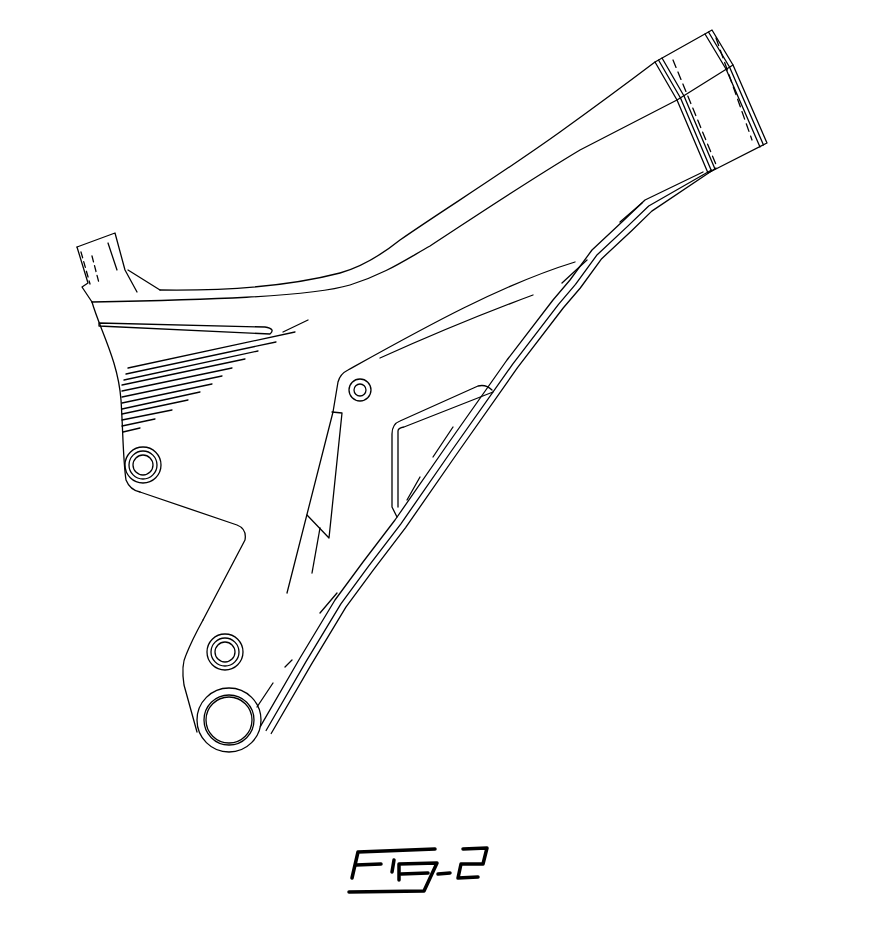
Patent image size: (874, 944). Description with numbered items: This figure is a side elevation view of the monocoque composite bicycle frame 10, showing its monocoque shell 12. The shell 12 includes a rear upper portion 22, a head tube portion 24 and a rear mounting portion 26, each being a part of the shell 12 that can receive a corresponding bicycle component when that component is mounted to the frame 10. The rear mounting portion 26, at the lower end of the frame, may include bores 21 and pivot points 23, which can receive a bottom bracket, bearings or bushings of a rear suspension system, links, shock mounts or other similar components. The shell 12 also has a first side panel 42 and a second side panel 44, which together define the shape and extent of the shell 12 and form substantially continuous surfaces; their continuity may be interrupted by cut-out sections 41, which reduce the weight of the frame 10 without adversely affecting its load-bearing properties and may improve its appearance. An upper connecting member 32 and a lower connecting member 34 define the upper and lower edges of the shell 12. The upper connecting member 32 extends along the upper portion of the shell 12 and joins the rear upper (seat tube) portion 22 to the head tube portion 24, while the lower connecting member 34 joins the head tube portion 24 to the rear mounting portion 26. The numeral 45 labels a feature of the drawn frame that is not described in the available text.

The frame 10 is at (236, 128).
The monocoque shell 12 is at (519, 130).
The bores 21 is at (243, 749).
The rear upper portion 22 is at (138, 281).
The pivot points 23 is at (125, 468).
The head tube portion 24 is at (735, 127).
The rear mounting portion 26 is at (202, 623).
The upper connecting member 32 is at (458, 204).
The lower connecting member 34 is at (455, 457).
The cut-out sections 41 is at (321, 506).
The first side panel 42 is at (585, 213).
The second side panel 44 is at (338, 274).
The dropout plate 45 is at (170, 500).